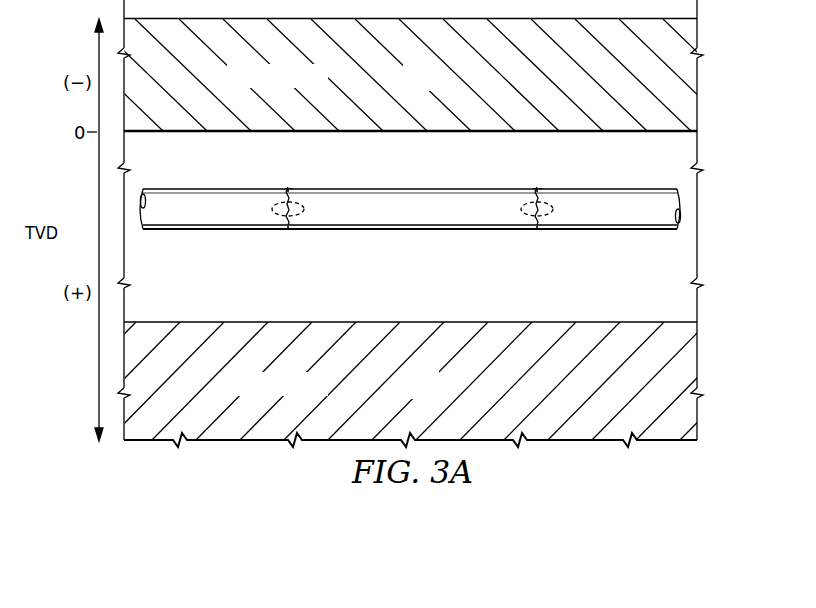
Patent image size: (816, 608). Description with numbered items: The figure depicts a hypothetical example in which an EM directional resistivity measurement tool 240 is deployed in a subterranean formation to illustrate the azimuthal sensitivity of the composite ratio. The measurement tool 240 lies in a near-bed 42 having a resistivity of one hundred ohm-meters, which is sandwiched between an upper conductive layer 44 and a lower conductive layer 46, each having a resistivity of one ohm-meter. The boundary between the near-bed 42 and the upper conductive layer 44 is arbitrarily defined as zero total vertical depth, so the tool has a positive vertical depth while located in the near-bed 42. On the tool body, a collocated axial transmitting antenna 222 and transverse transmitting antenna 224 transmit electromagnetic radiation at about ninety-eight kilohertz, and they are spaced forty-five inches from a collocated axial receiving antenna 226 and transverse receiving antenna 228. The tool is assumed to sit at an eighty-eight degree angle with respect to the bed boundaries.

The near-bed 42 is at (595, 288).
The conductive layer 44 is at (431, 88).
The conductive layer 46 is at (434, 396).
The measurement tool 240 is at (413, 230).
The axial transmitting antenna 222 is at (290, 192).
The transverse transmitting antenna 224 is at (271, 210).
The axial receiving antenna 226 is at (540, 192).
The transverse receiving antenna 228 is at (521, 209).